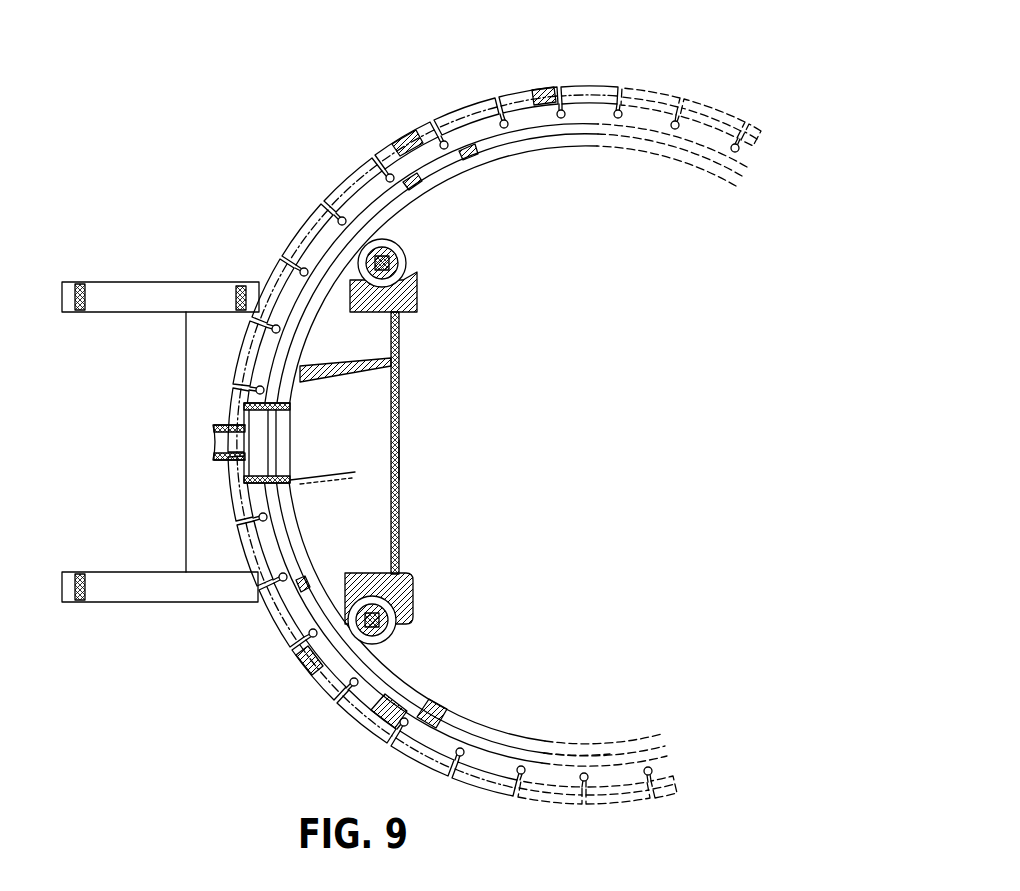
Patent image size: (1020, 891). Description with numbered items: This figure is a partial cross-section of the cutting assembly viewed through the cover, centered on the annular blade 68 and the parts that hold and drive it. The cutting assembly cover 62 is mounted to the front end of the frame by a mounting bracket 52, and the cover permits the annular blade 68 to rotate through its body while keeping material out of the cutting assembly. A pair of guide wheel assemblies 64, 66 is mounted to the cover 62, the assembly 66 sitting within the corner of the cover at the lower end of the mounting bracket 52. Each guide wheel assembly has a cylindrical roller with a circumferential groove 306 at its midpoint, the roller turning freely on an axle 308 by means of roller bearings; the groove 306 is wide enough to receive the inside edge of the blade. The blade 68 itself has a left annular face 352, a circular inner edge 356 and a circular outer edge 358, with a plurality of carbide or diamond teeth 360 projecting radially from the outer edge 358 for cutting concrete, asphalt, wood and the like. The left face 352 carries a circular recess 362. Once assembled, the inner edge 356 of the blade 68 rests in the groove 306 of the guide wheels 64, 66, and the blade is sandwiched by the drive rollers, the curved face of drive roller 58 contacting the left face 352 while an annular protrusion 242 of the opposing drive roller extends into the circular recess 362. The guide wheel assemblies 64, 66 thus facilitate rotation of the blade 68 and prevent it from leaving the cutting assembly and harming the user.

The mounting bracket 52 is at (150, 282).
The first drive roller 58 is at (291, 444).
The cutting assembly cover 62 is at (400, 461).
The guide wheel assembly 64 is at (397, 640).
The guide wheel assembly 66 is at (404, 250).
The annular blade 68 is at (412, 142).
The annular protrusion 242 is at (275, 432).
The circumferential groove 306 is at (399, 258).
The axle 308 is at (412, 267).
The left annular face 352 is at (545, 784).
The circular inner edge 356 is at (480, 730).
The circular outer edge 358 is at (275, 630).
The teeth 360 is at (306, 668).
The circular recess 362 is at (580, 754).